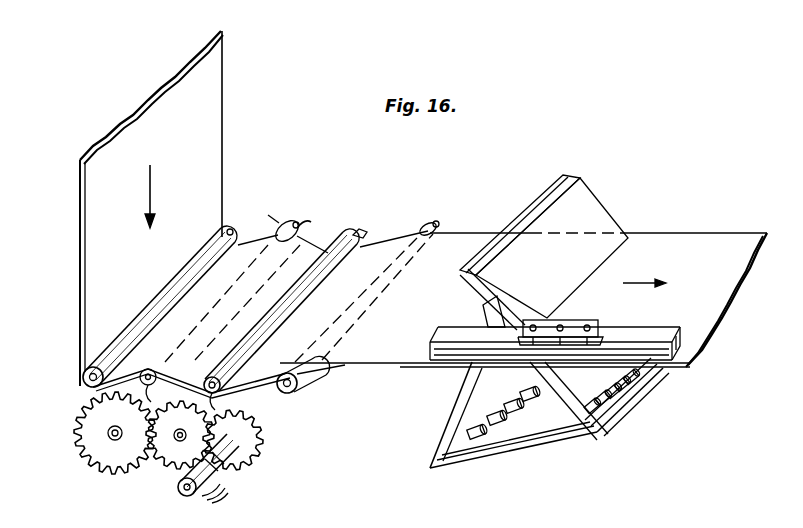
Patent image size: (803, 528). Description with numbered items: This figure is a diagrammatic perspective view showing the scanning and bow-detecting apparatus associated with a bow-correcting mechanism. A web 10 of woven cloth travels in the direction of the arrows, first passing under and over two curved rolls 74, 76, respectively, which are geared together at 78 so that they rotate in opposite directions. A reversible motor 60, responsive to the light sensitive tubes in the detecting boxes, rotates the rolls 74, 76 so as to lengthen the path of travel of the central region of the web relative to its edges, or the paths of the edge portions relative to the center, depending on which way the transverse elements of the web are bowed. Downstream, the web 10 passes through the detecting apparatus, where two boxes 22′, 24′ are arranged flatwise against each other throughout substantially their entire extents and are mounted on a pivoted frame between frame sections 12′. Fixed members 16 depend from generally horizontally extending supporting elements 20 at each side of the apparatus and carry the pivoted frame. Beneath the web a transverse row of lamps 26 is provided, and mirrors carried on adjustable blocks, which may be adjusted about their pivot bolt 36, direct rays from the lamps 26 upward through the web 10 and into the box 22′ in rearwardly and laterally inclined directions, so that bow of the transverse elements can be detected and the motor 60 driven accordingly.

The web 10 is at (222, 157).
The curved roll 74 is at (288, 235).
The curved roll 76 is at (257, 338).
The gearing 78 is at (141, 463).
The reversible motor 60 is at (185, 481).
The box 22′ is at (516, 223).
The box 24′ is at (589, 219).
The supporting element 20 is at (637, 338).
The frame section 12′ is at (440, 418).
The lamp 26 is at (494, 411).
The fixed member 16 is at (570, 385).
The pivot bolt 36 is at (603, 418).